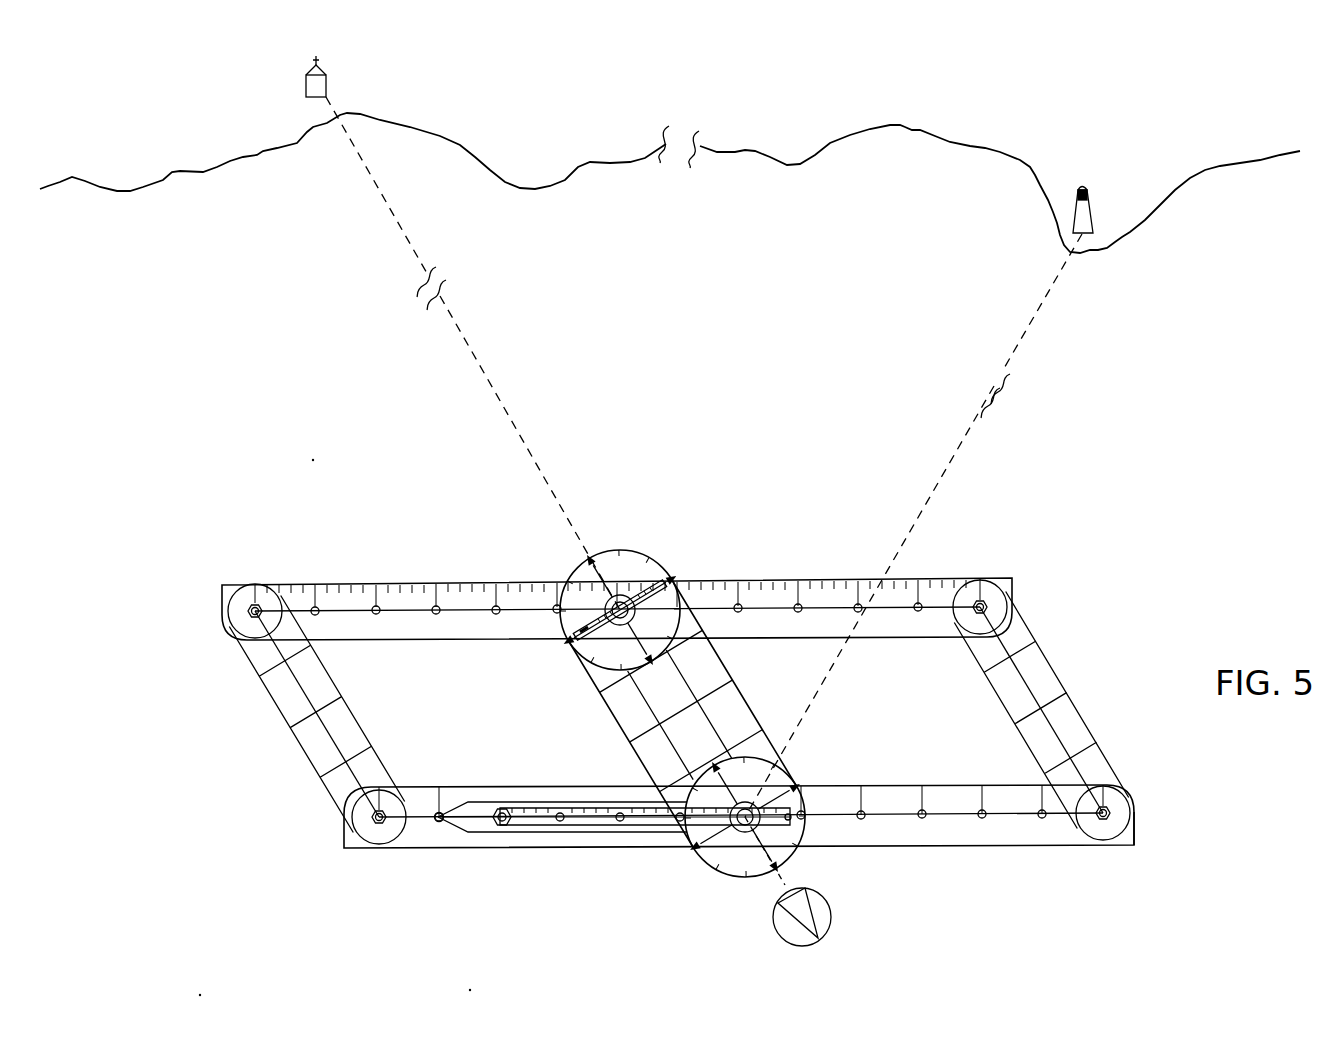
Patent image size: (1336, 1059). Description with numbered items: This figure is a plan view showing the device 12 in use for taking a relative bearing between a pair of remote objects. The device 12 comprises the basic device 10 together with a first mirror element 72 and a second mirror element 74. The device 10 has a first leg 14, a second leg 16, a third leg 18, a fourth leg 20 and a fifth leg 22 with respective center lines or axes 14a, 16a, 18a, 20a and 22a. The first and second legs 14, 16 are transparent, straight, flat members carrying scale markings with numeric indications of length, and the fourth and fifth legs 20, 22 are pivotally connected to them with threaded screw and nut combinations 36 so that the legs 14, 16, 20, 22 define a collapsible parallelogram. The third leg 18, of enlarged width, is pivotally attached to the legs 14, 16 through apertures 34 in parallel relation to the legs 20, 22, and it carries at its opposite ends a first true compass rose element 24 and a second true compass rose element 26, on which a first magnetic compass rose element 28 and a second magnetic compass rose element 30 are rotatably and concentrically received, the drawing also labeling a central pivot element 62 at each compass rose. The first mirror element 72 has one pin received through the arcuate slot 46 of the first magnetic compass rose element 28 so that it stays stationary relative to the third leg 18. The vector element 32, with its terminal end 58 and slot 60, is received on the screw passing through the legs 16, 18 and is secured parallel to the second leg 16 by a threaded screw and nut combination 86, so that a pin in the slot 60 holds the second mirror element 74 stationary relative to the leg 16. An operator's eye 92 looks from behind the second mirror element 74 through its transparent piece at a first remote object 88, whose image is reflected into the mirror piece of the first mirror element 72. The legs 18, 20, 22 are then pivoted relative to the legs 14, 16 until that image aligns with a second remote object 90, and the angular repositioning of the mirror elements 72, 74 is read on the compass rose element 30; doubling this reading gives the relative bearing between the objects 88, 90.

The device 10 is at (1068, 560).
The device 12 is at (785, 506).
The first leg 14 is at (634, 705).
The center line or axis 14a is at (650, 705).
The second leg 16 is at (770, 840).
The center line or axis 16a is at (948, 816).
The third leg 18 is at (679, 713).
The center line or axis 18a is at (674, 692).
The fourth leg 20 is at (316, 714).
The center line or axis 20a is at (332, 737).
The fifth leg 22 is at (1056, 710).
The center line or axis 22a is at (1032, 696).
The first true compass rose element 24 is at (700, 584).
The second true compass rose element 26 is at (768, 750).
The first magnetic compass rose element 28 is at (689, 691).
The second magnetic compass rose element 30 is at (759, 815).
The vector element 32 is at (614, 823).
The apertures 34 is at (921, 606).
The threaded screw and nut combinations 36 is at (1135, 838).
The arcuate slot 46 is at (577, 593).
The terminal end 58 is at (442, 821).
The slot 60 is at (597, 823).
The pivot hub 62 is at (603, 584).
The first mirror element 72 is at (652, 590).
The second mirror element 74 is at (790, 802).
The threaded screw and nut combination 86 is at (502, 807).
The first remote object 88 is at (1093, 213).
The second remote object 90 is at (326, 92).
The eye 92 is at (832, 922).